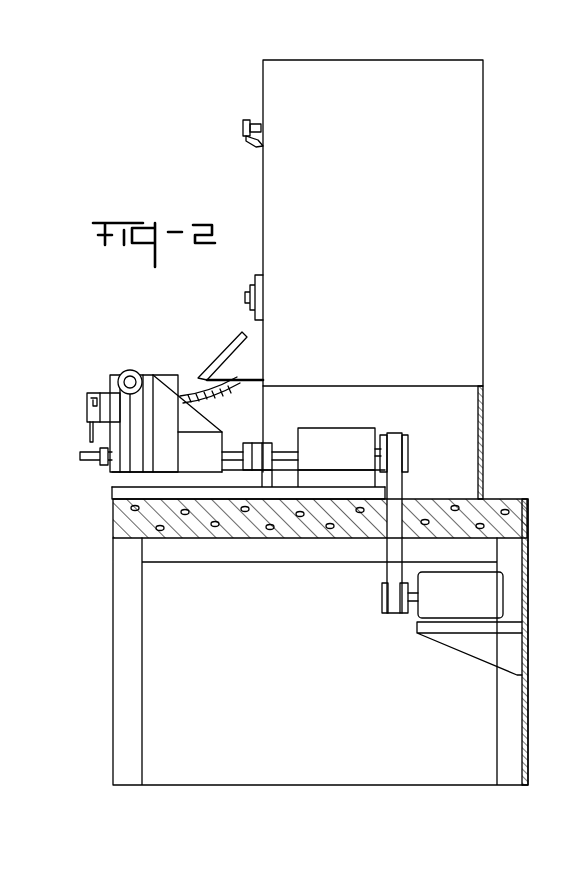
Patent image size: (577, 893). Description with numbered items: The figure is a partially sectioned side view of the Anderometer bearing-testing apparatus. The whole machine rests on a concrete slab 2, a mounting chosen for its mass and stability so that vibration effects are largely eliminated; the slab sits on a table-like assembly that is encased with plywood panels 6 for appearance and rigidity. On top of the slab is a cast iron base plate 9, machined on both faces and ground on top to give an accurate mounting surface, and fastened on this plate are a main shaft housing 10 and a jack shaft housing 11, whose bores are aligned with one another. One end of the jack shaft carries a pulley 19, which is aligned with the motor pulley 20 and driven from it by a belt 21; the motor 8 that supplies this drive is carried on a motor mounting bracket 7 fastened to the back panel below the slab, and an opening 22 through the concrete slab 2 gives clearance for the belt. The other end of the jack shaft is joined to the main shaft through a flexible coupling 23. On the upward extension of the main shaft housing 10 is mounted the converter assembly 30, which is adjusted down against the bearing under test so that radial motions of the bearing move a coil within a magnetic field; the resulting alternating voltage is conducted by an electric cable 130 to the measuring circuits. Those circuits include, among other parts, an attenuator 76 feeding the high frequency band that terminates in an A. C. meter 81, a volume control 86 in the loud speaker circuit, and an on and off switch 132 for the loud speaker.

The concrete slab 2 is at (248, 540).
The plywood panels 6 is at (528, 700).
The motor mounting bracket 7 is at (483, 648).
The motor 8 is at (472, 602).
The base plate 9 is at (118, 495).
The main shaft housing 10 is at (207, 442).
The jack shaft housing 11 is at (350, 438).
The pulley 19 is at (408, 452).
The motor pulley 20 is at (382, 606).
The belt 21 is at (393, 615).
The opening 22 is at (385, 540).
The flexible coupling 23 is at (267, 443).
The converter assembly 30 is at (87, 410).
The attenuator 76 is at (246, 300).
The A. C. meter 81 is at (215, 353).
The volume control 86 is at (243, 122).
The electric cable 130 is at (186, 397).
The on and off switch 132 is at (252, 141).